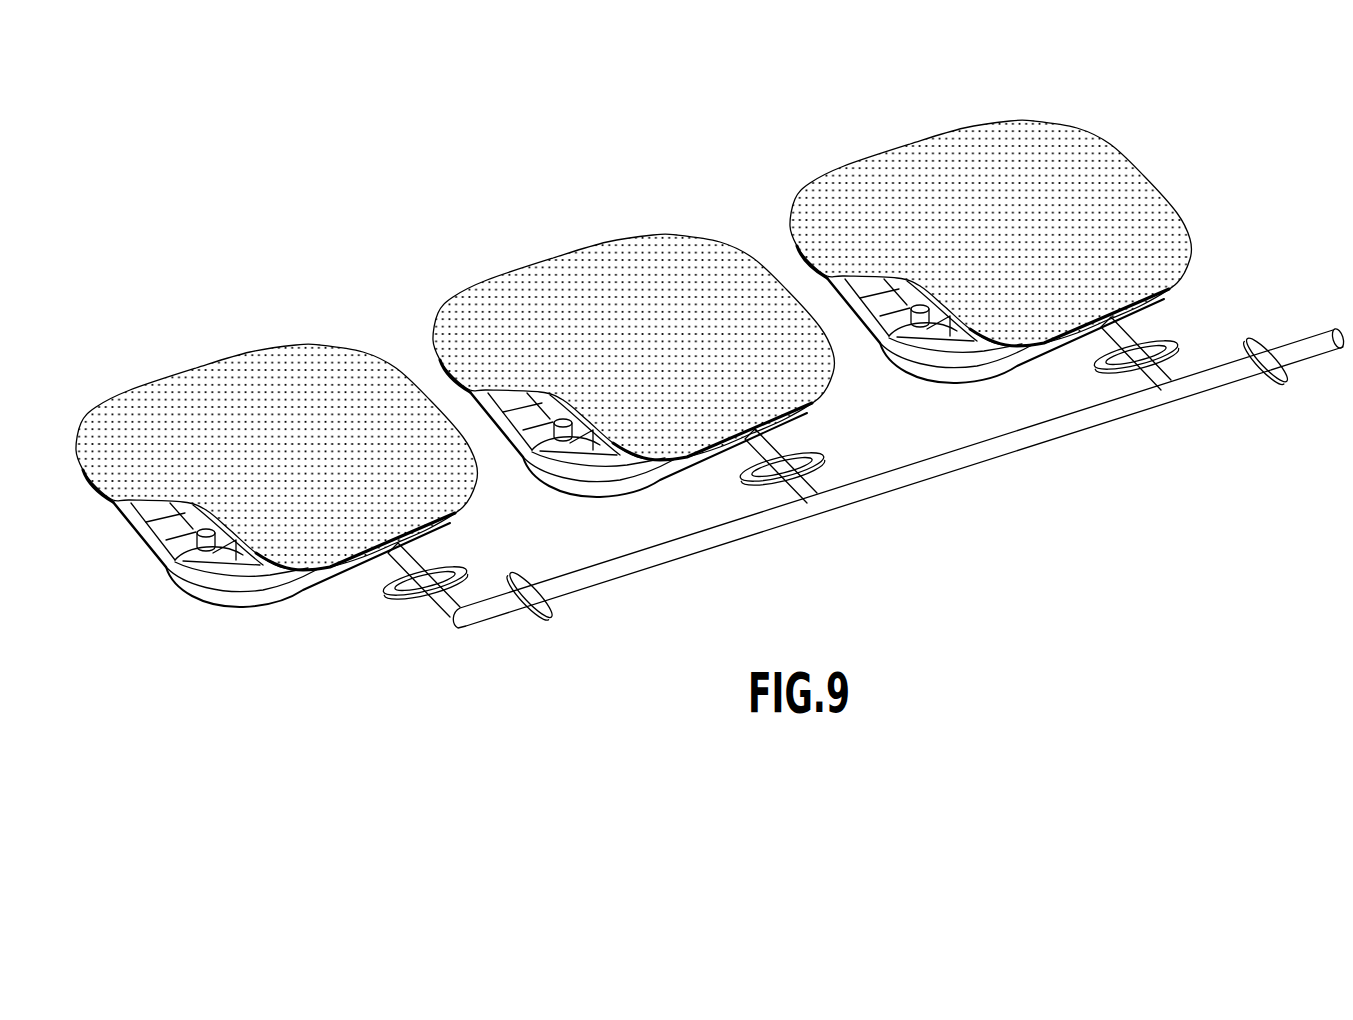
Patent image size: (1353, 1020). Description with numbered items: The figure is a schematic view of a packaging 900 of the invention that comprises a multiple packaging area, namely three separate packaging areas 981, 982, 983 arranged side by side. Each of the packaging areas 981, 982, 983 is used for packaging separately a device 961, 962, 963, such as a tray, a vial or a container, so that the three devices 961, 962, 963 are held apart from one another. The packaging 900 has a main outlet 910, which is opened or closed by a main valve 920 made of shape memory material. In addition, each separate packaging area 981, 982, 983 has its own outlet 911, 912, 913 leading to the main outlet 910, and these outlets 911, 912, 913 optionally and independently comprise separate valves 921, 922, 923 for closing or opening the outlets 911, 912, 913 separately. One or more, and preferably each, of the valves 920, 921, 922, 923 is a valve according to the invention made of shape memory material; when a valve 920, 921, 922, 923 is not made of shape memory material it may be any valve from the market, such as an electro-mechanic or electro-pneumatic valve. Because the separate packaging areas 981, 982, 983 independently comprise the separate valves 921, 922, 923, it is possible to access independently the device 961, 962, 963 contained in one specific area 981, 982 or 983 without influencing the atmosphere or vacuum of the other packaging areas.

The packaging 900 is at (272, 176).
The main outlet 910 is at (925, 487).
The outlet 911 is at (378, 598).
The outlet 912 is at (730, 485).
The outlet 913 is at (1083, 372).
The main valve 920 is at (1278, 383).
The valve 921 is at (541, 626).
The valve 922 is at (837, 452).
The valve 923 is at (1183, 330).
The device 961 is at (195, 546).
The device 962 is at (552, 436).
The device 963 is at (909, 322).
The packaging area 981 is at (215, 367).
The packaging area 982 is at (542, 257).
The packaging area 983 is at (892, 145).